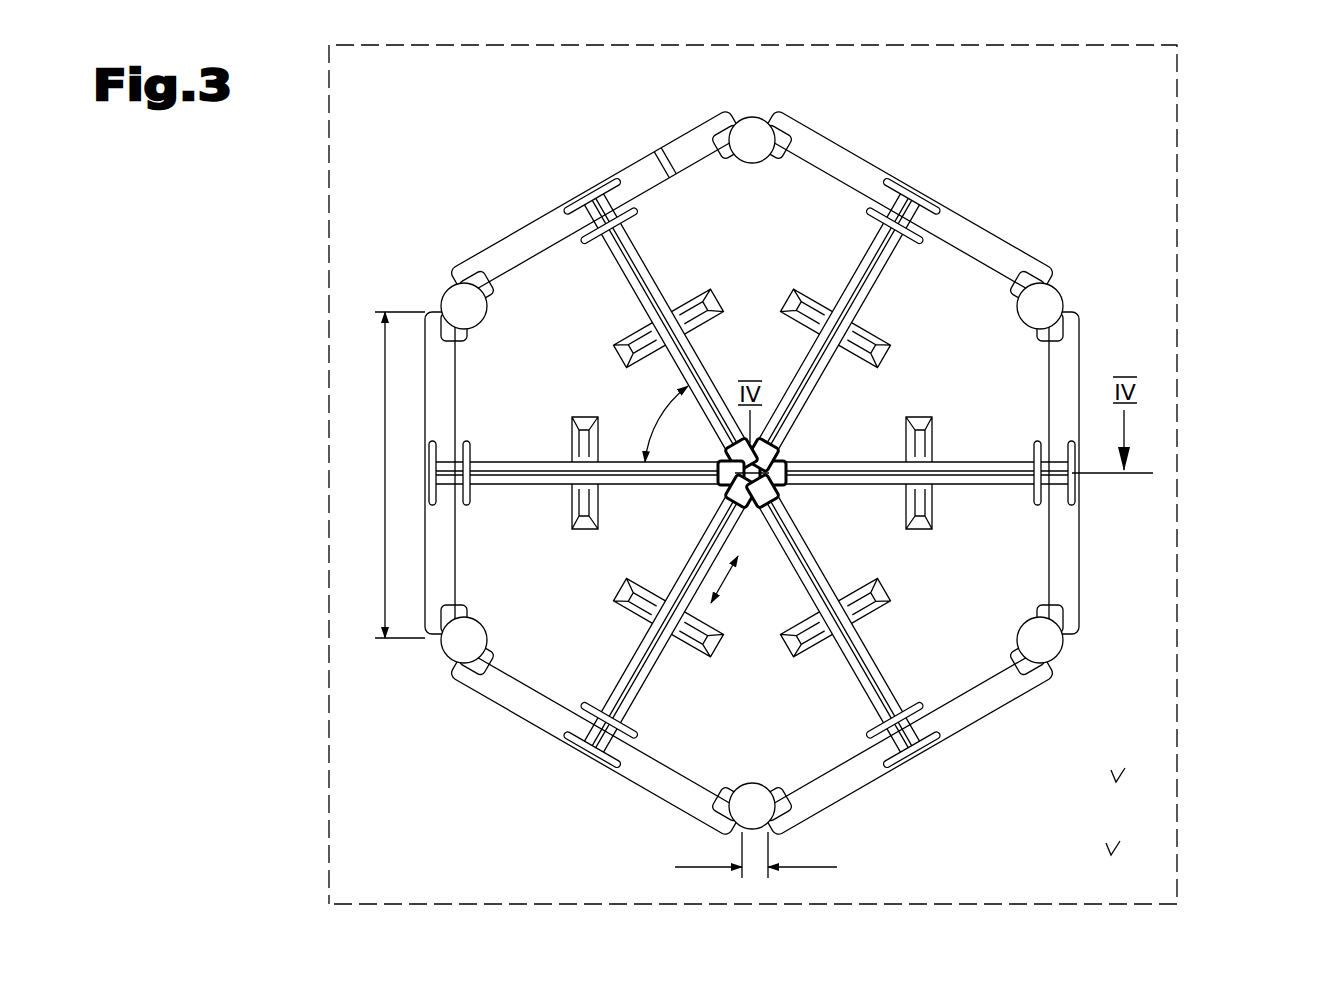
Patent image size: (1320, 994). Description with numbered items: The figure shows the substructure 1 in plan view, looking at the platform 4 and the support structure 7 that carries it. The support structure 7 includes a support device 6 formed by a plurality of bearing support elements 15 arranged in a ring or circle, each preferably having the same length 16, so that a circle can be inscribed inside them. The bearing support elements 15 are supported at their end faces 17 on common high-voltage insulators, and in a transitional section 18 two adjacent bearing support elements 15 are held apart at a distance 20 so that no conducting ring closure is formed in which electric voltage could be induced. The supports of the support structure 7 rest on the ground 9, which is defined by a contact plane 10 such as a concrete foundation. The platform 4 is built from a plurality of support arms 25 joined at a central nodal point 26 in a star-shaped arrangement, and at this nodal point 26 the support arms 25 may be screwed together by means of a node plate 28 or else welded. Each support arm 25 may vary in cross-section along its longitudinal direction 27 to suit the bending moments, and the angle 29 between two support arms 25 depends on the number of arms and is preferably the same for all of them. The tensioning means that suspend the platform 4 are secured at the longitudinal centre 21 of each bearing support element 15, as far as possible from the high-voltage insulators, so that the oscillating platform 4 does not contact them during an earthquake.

The substructure 1 is at (1107, 128).
The platform 4 is at (897, 266).
The support device 6 is at (1154, 429).
The support structure 7 is at (1125, 618).
The ground 9 is at (1133, 768).
The contact plane 10 is at (1128, 838).
The bearing support element 15 is at (1070, 362).
The length 16 is at (385, 547).
The end face 17 is at (1080, 640).
The transitional section 18 is at (770, 105).
The distance 20 is at (741, 868).
The longitudinal centre 21 is at (1104, 480).
The support arm 25 is at (752, 464).
The nodal point 26 is at (802, 441).
The longitudinal direction 27 is at (731, 594).
The node plate 28 is at (733, 488).
The angle 29 is at (657, 419).